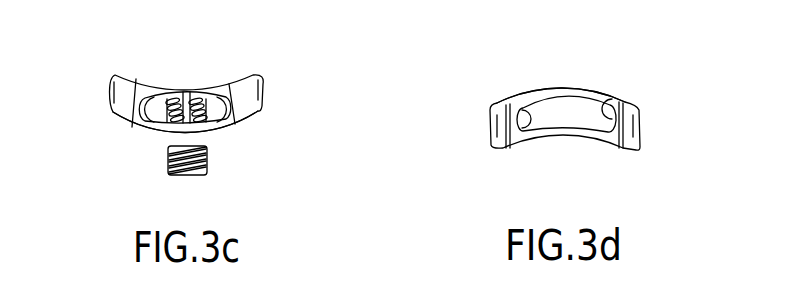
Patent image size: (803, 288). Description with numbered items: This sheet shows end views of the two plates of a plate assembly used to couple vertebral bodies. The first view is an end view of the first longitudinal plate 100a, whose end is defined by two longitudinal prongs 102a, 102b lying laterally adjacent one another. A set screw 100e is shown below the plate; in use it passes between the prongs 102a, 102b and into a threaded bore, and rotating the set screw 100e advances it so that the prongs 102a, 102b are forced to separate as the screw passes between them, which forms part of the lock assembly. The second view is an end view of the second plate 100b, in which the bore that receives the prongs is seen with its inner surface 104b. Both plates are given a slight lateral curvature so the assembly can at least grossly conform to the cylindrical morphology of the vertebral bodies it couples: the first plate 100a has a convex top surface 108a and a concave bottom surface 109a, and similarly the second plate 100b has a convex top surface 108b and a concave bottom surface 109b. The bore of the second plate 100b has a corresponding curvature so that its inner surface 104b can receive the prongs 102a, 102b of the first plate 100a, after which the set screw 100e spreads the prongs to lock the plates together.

In FIG. 3C, the first longitudinal plate 100a is at (101, 83).
In FIG. 3D, the second plate 100b is at (648, 126).
In FIG. 3C, the set screw 100e is at (167, 165).
In FIG. 3C, the longitudinal prong 102a is at (148, 107).
In FIG. 3C, the longitudinal prong 102b is at (217, 115).
In FIG. 3D, the inner surface 104b is at (523, 110).
In FIG. 3C, the convex top surface 108a is at (136, 135).
In FIG. 3D, the convex top surface 108b is at (561, 80).
In FIG. 3C, the concave bottom surface 109a is at (180, 81).
In FIG. 3D, the concave bottom surface 109b is at (548, 142).